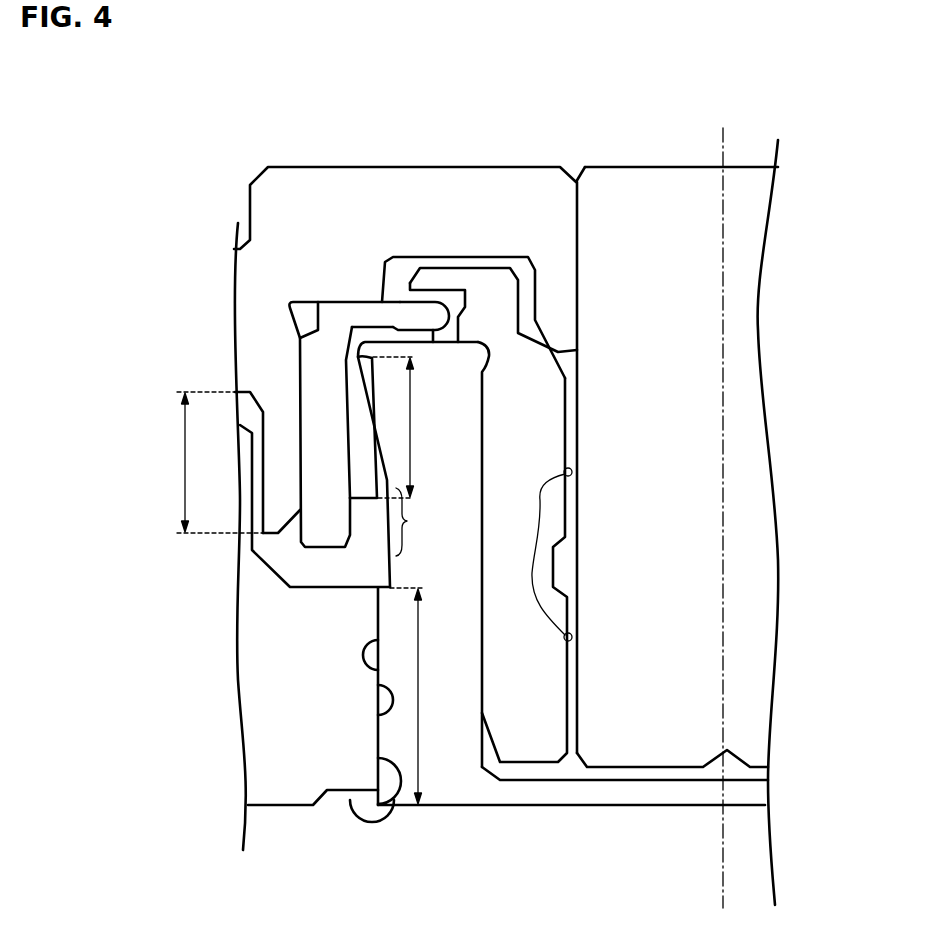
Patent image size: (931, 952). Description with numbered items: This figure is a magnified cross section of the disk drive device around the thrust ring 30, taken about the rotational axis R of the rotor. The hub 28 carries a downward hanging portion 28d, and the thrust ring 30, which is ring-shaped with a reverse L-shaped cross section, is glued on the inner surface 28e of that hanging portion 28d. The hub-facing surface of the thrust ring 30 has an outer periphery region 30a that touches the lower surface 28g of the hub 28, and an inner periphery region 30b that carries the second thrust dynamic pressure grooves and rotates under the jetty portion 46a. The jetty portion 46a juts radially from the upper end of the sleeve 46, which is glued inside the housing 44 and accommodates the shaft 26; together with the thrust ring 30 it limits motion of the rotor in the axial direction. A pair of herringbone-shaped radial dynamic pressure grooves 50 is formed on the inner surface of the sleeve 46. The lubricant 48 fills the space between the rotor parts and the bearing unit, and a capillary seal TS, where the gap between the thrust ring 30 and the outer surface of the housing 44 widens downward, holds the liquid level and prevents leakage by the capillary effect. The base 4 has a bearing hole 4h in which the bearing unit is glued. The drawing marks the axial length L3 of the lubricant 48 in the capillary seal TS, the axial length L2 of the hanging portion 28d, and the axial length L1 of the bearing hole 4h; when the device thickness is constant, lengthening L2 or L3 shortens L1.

The base 4 is at (275, 753).
The bearing hole 4h is at (398, 812).
The shaft 26 is at (614, 205).
The hub 28 is at (390, 187).
The hanging portion 28d is at (278, 443).
The inner surface 28e is at (328, 352).
The lower surface 28g is at (342, 350).
The thrust ring 30 is at (303, 447).
The outer periphery region 30a is at (356, 301).
The inner periphery region 30b is at (428, 302).
The housing 44 is at (640, 793).
The sleeve 46 is at (533, 730).
The jetty portion 46a is at (452, 282).
The lubricant 48 is at (360, 472).
The radial dynamic pressure grooves 50 is at (564, 472).
The length of the bearing hole L1 is at (430, 656).
The length of the hanging portion L2 is at (176, 462).
The length of the lubricant in the capillary seal L3 is at (418, 438).
The capillary seal TS is at (417, 522).
The rotational axis R is at (720, 504).